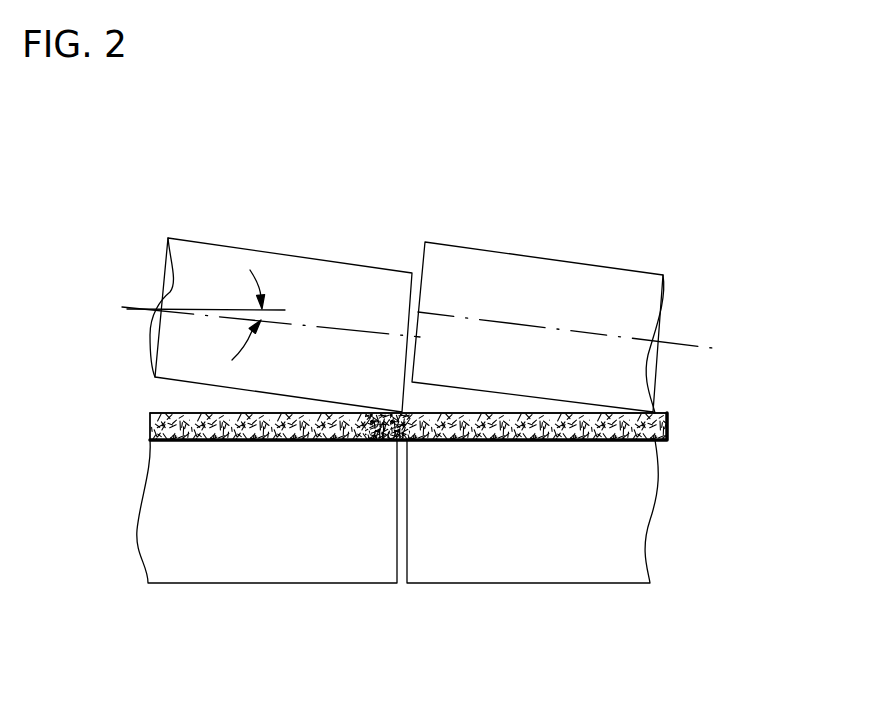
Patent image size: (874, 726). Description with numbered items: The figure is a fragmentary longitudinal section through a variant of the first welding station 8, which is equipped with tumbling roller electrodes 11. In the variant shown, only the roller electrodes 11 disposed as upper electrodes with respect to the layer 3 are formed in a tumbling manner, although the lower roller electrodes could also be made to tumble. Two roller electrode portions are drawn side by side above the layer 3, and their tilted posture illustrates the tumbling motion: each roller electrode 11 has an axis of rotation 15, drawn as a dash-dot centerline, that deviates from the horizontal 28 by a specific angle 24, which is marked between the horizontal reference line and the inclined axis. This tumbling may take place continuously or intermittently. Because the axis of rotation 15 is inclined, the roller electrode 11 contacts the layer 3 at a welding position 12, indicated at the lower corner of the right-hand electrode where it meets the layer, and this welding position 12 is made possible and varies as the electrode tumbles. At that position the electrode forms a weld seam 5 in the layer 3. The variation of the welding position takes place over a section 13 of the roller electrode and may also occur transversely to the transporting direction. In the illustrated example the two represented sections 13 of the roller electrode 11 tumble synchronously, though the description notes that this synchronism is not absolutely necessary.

The first welding station 8 is at (481, 168).
The roller electrode 11 is at (640, 285).
The axis of rotation 15 is at (680, 343).
The welding position 12 is at (662, 409).
The layer 3 is at (150, 413).
The weld seam 5 is at (650, 450).
The section 13 is at (395, 592).
The horizontal 28 is at (182, 310).
The angle 24 is at (261, 319).